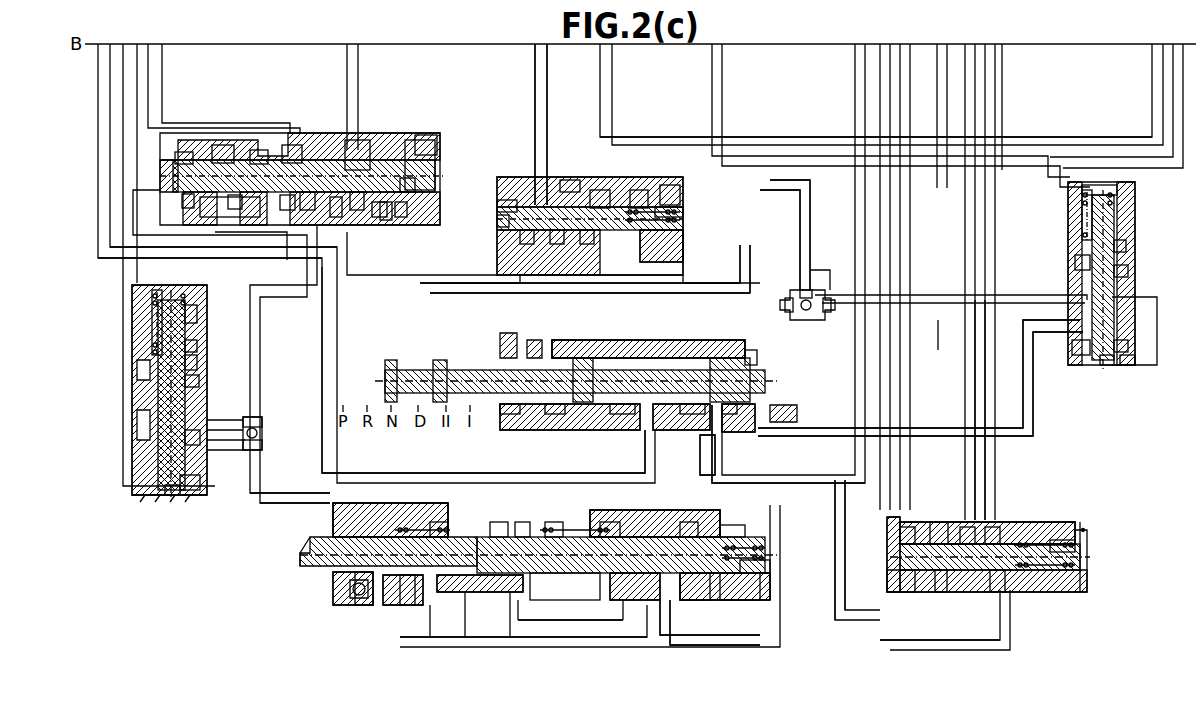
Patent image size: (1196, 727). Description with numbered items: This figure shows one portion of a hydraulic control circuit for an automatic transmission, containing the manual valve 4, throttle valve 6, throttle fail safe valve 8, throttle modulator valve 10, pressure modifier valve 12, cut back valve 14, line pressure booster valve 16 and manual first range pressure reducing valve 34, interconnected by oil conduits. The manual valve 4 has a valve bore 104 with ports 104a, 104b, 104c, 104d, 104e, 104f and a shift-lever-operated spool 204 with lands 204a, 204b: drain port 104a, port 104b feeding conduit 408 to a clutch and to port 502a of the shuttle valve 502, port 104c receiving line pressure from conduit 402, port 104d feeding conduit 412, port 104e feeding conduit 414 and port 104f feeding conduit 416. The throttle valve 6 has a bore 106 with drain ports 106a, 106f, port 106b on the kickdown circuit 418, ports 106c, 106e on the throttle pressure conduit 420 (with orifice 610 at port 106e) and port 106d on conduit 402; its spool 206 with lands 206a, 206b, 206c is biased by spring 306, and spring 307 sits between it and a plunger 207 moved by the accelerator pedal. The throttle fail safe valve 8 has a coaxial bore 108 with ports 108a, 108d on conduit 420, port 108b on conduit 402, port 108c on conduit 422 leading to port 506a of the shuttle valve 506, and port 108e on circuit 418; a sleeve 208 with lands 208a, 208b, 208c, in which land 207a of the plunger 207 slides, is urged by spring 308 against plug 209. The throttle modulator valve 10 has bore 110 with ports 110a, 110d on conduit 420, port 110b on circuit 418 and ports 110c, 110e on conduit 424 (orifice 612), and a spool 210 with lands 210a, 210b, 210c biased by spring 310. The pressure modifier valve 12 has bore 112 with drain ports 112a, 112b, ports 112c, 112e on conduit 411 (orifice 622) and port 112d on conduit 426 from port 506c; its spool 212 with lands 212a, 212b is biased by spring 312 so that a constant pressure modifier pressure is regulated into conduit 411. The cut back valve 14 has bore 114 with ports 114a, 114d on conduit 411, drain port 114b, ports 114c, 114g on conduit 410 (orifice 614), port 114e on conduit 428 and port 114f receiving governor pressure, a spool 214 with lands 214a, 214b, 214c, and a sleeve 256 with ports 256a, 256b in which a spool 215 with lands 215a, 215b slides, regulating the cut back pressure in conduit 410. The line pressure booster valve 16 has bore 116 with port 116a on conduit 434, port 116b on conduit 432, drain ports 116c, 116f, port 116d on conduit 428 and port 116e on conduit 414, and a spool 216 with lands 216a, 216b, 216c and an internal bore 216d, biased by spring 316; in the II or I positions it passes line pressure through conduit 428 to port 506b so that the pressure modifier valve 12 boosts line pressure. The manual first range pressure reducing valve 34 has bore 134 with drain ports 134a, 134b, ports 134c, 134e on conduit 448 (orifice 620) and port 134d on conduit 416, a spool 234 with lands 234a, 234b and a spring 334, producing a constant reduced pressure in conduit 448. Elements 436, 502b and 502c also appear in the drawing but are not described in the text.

The manual valve 4 is at (620, 330).
The shift valve 6 is at (782, 550).
The shift valve 8 is at (558, 514).
The shift valve 10 is at (1060, 490).
The control valve 12 is at (160, 508).
The pressure regulator valve 14 is at (395, 242).
The valve 16 is at (700, 204).
The valve 34 is at (1090, 402).
The valve body bore 104 is at (672, 345).
The port 104a is at (510, 414).
The port 104b is at (552, 414).
The port 104c is at (628, 414).
The port 104d is at (700, 414).
The port 104e is at (760, 365).
The port 104f is at (730, 414).
The valve body bore 106 is at (598, 512).
The port 106a is at (580, 588).
The port 106b is at (672, 640).
The port 106c is at (665, 625).
The port 106d is at (688, 590).
The port 106e is at (735, 590).
The port 106f is at (770, 566).
The valve body bore 108 is at (333, 515).
The port 108a is at (362, 605).
The port 108b is at (408, 605).
The port 108c is at (433, 630).
The port 108d is at (467, 637).
The port 108e is at (512, 620).
The valve body bore 110 is at (1060, 522).
The port 110a is at (910, 527).
The port 110b is at (940, 522).
The port 110c is at (965, 527).
The port 110d is at (992, 527).
The port 110e is at (1076, 544).
The valve body bore 112 is at (185, 330).
The port 112a is at (197, 312).
The port 112b is at (197, 362).
The port 112c is at (199, 380).
The port 112d is at (195, 445).
The port 112e is at (195, 488).
The valve body bore 114 is at (302, 176).
The port 114a is at (180, 152).
The port 114b is at (216, 145).
The port 114c is at (255, 150).
The port 114d is at (288, 145).
The port 114e is at (322, 210).
The port 114f is at (360, 212).
The port 114g is at (415, 192).
The valve body bore 116 is at (505, 232).
The port 116a is at (526, 244).
The port 116b is at (556, 244).
The port 116c is at (587, 244).
The port 116d is at (600, 190).
The port 116e is at (640, 192).
The port 116f is at (683, 210).
The valve body bore 134 is at (1116, 222).
The port 134a is at (1118, 188).
The port 134b is at (1126, 246).
The port 134c is at (1128, 272).
The port 134d is at (1128, 352).
The port 134e is at (1106, 365).
The valve spool 204 is at (468, 370).
The land 204a is at (580, 358).
The land 204b is at (722, 358).
The valve spool 206 is at (575, 560).
The land 206a is at (605, 522).
The land 206b is at (690, 522).
The land 206c is at (738, 525).
The valve spool 207 is at (305, 565).
The land 207a is at (522, 522).
The valve spool 208 is at (475, 537).
The land 208a is at (440, 522).
The land 208b is at (498, 522).
The land 208c is at (554, 522).
The plug 209 is at (345, 596).
The valve spool 210 is at (1040, 570).
The land 210a is at (910, 592).
The land 210b is at (942, 592).
The land 210c is at (998, 592).
The valve spool 212 is at (152, 310).
The land 212a is at (197, 346).
The land 212b is at (190, 495).
The valve spool 214 is at (235, 217).
The land 214a is at (185, 208).
The land 214b is at (232, 209).
The land 214c is at (288, 210).
The plunger 215 is at (355, 140).
The land 215a is at (338, 217).
The land 215b is at (385, 217).
The valve spool 216 is at (648, 250).
The land 216a is at (505, 200).
The land 216b is at (560, 180).
The land 216c is at (672, 190).
The land 216d is at (500, 215).
The valve spool 234 is at (1082, 212).
The land 234a is at (1075, 262).
The land 234b is at (1078, 355).
The plug 256 is at (440, 150).
The land 256a is at (388, 220).
The land 256b is at (402, 217).
The spring 306 is at (766, 552).
The spring 307 is at (548, 528).
The spring 308 is at (400, 528).
The spring 310 is at (1080, 578).
The spring 312 is at (155, 345).
The spring 316 is at (683, 219).
The spring 334 is at (1086, 230).
The line pressure passage 402 is at (324, 350).
The passage 408 is at (535, 300).
The passage 410 is at (162, 76).
The passage 411 is at (175, 183).
The passage 412 is at (1068, 137).
The passage 414 is at (740, 283).
The passage 416 is at (1022, 375).
The passage 418 is at (518, 622).
The drain passage 420 is at (605, 647).
The passage 422 is at (280, 493).
The passage 424 is at (986, 462).
The passage 426 is at (205, 460).
The passage 428 is at (262, 380).
The passage 432 is at (600, 132).
The passage 434 is at (535, 148).
The passage 436 is at (826, 270).
The passage 448 is at (1150, 300).
The orifice 502 is at (808, 320).
The check ball seat 502a is at (788, 312).
The check ball seat 502b is at (827, 312).
The orifice 502c is at (805, 290).
The orifice 506 is at (262, 422).
The check ball seat 506a is at (262, 445).
The check ball seat 506b is at (256, 417).
The orifice 506c is at (225, 420).
The solenoid port 610 is at (718, 500).
The solenoid port 612 is at (1085, 530).
The solenoid port 614 is at (428, 135).
The solenoid port 620 is at (1130, 365).
The solenoid port 622 is at (138, 497).